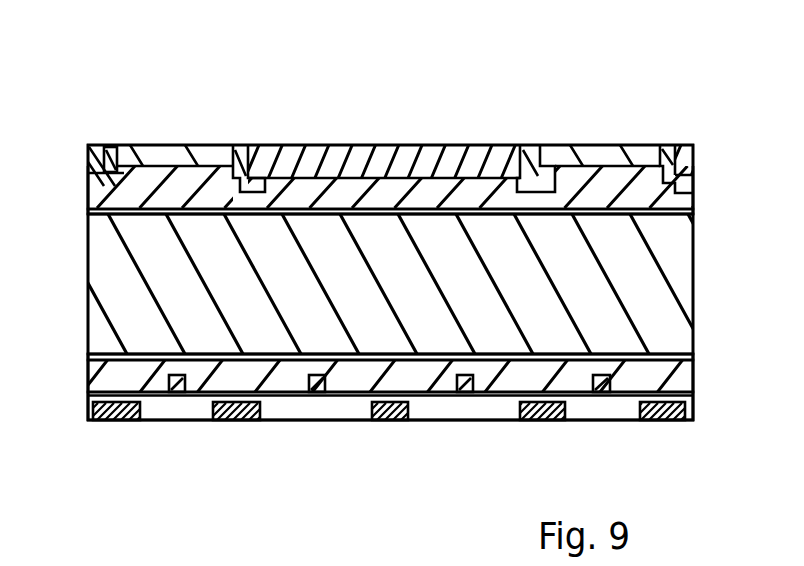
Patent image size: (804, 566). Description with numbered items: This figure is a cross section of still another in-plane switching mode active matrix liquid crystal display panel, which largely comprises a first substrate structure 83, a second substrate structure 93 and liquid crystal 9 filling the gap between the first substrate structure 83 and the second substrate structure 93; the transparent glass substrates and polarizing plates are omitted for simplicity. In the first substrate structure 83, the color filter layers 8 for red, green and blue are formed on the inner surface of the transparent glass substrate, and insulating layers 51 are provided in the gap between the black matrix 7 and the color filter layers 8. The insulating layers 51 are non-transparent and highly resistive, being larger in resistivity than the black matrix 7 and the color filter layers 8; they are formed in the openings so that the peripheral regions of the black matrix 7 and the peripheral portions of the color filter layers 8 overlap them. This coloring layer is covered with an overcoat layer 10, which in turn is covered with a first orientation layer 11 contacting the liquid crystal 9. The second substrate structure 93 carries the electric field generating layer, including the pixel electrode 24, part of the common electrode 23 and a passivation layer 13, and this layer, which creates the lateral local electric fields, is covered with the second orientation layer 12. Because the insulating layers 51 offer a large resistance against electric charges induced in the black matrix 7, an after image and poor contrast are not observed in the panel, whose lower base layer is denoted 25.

The first substrate structure 83 is at (301, 80).
The second substrate structure 93 is at (282, 482).
The black matrix 7 is at (183, 145).
The color filter layers 8 is at (95, 145).
The insulating layer 51 is at (117, 145).
The overcoat layer 10 is at (697, 193).
The first orientation layer 11 is at (697, 212).
The liquid crystal 9 is at (683, 312).
The second orientation layer 12 is at (695, 356).
The passivation layer 13 is at (695, 379).
The substrate 25 is at (695, 408).
The common electrode 23 is at (116, 421).
The pixel electrode 24 is at (177, 392).